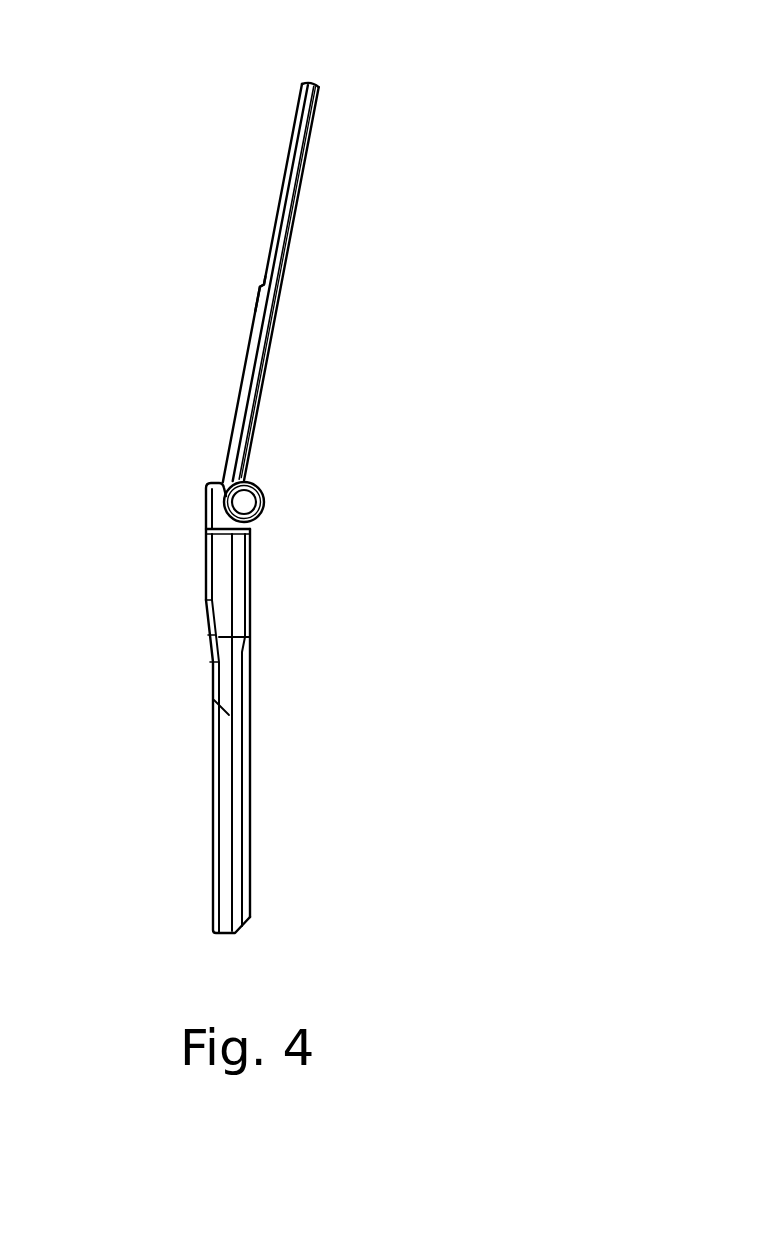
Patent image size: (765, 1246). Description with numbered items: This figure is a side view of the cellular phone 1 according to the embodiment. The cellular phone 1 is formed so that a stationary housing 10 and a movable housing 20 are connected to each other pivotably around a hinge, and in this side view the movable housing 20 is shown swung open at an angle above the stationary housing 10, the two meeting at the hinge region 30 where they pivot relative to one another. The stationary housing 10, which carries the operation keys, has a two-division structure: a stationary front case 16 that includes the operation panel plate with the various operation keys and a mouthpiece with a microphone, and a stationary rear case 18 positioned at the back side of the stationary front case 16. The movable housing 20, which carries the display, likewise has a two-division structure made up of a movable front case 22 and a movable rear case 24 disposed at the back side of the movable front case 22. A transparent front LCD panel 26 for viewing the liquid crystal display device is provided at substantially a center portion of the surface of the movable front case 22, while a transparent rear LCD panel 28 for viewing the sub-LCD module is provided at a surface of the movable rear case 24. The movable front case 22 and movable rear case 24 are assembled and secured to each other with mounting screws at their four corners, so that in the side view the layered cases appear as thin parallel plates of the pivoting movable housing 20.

The cellular phone 1 is at (389, 70).
The stationary housing 10 is at (170, 699).
The stationary front case 16 is at (253, 610).
The stationary rear case 18 is at (205, 577).
The movable housing 20 is at (228, 277).
The movable front case 22 is at (308, 143).
The movable rear case 24 is at (287, 163).
The front LCD panel 26 is at (280, 310).
The rear LCD panel 28 is at (248, 353).
The hinge pin 30 is at (253, 504).